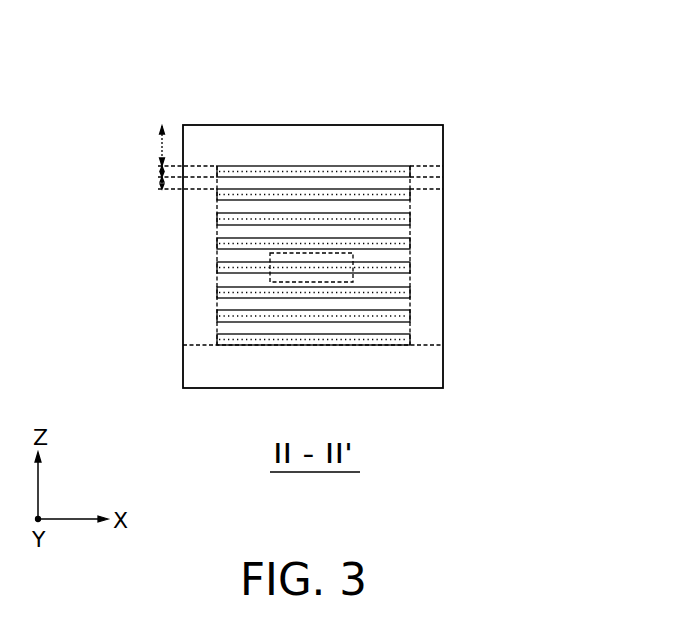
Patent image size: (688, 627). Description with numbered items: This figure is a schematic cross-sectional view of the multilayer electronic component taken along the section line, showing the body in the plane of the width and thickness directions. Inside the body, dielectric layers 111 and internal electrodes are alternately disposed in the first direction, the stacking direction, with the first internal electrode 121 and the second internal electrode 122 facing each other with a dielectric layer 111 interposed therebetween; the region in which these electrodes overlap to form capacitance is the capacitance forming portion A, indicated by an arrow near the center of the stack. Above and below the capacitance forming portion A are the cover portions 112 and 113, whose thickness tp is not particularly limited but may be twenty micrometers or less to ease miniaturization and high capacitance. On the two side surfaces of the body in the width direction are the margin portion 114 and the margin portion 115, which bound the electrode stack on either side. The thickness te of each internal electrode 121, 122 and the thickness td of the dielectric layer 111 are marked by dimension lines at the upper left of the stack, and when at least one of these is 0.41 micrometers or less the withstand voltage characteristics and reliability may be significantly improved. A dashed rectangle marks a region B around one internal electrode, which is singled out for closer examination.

The cover portion 112 is at (319, 143).
The cover portion 113 is at (435, 366).
The margin portion 114 is at (205, 296).
The margin portion 115 is at (435, 311).
The first internal electrode 121 is at (407, 166).
The second internal electrode 122 is at (405, 190).
The dielectric layer 111 is at (405, 178).
The capacitance forming portion A is at (217, 260).
The enlarged region B (B') B is at (353, 282).
The thickness of cover portion tp is at (150, 146).
The thickness of internal electrode te is at (160, 170).
The thickness of dielectric layer td is at (160, 183).